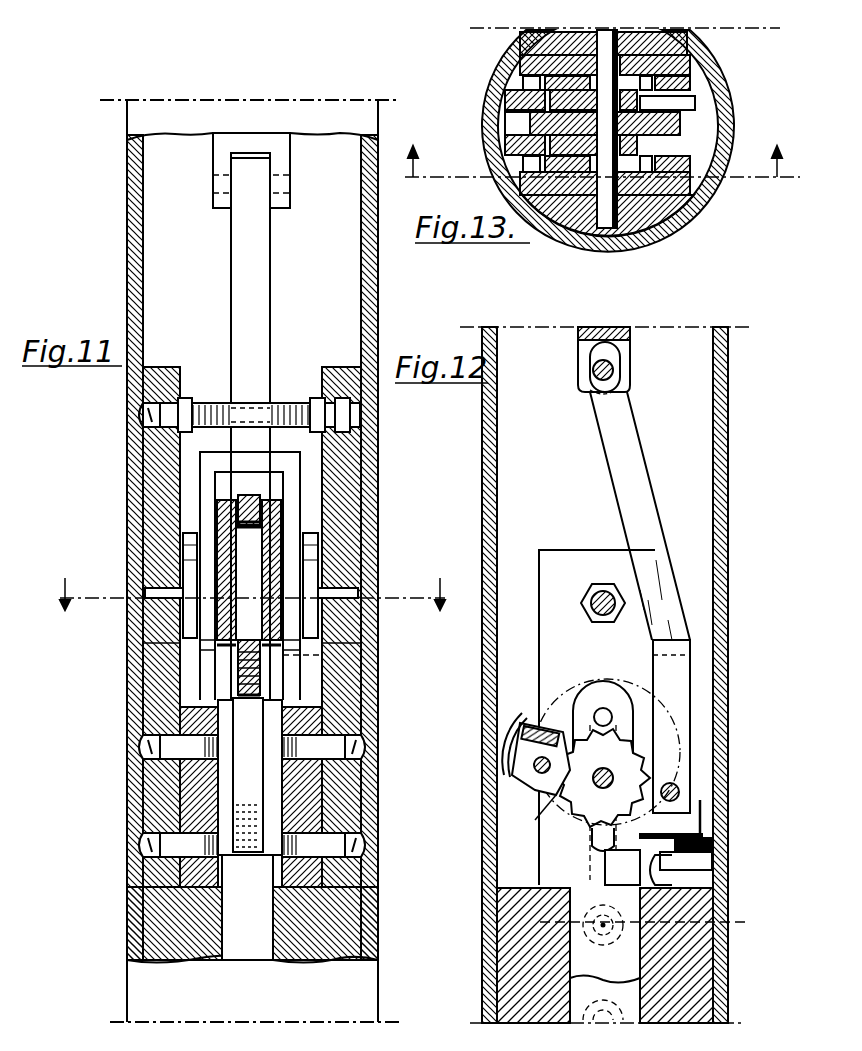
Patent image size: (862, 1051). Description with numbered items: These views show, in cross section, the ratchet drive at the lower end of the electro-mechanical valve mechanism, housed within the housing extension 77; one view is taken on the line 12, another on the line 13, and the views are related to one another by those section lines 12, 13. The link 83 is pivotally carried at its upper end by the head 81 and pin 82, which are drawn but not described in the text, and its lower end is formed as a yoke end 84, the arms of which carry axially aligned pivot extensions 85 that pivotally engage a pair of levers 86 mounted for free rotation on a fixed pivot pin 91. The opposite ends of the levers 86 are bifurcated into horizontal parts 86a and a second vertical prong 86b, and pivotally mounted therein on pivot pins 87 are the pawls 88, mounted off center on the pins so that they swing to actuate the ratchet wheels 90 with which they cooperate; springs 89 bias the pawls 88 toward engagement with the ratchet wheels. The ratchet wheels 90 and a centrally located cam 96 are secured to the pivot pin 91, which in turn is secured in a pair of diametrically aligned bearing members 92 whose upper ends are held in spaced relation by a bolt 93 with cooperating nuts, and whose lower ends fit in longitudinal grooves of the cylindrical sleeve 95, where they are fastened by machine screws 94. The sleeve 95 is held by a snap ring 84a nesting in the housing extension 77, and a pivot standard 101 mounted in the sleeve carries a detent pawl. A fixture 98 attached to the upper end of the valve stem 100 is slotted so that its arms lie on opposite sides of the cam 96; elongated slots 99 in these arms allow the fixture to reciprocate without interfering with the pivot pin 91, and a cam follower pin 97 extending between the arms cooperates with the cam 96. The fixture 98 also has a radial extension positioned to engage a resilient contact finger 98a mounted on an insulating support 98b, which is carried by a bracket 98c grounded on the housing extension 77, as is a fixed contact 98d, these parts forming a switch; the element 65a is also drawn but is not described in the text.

In FIG. 13, the section line 12— 12 is at (599, 161).
In FIG. 11, the section line 13— 13 is at (253, 593).
In FIG. 12, the spring rod 65a is at (702, 812).
In FIG. 11, the housing extension 77 is at (128, 206).
In FIG. 13, the housing extension 77 is at (608, 141).
In FIG. 12, the housing extension 77 is at (728, 390).
In FIG. 11, the head block 81 is at (214, 152).
In FIG. 12, the head block 81 is at (578, 336).
In FIG. 11, the pivot pin 82 is at (218, 190).
In FIG. 12, the pivot pin 82 is at (596, 373).
In FIG. 11, the link 83 is at (240, 264).
In FIG. 12, the link 83 is at (620, 400).
In FIG. 11, the yoke end 84 is at (292, 527).
In FIG. 13, the yoke end 84 is at (700, 96).
In FIG. 12, the yoke end 84 is at (676, 730).
In FIG. 12, the snap ring 84a is at (712, 860).
In FIG. 13, the pivot extensions 85 is at (690, 60).
In FIG. 12, the pivot extensions 85 is at (680, 792).
In FIG. 11, the levers 86 is at (190, 554).
In FIG. 13, the levers 86 is at (700, 75).
In FIG. 12, the horizontal parts of levers 86a is at (530, 727).
In FIG. 13, the vertical prong 86b is at (510, 130).
In FIG. 13, the pivot pins 87 is at (540, 70).
In FIG. 12, the pivot pins 87 is at (540, 724).
In FIG. 13, the pawls 88 is at (520, 92).
In FIG. 12, the pawls 88 is at (556, 785).
In FIG. 12, the springs 89 is at (535, 768).
In FIG. 11, the ratchet wheels 90 is at (340, 627).
In FIG. 13, the ratchet wheels 90 is at (650, 85).
In FIG. 12, the ratchet wheels 90 is at (590, 825).
In FIG. 11, the pivot pin 91 is at (355, 584).
In FIG. 13, the pivot pin 91 is at (605, 240).
In FIG. 12, the pivot pin 91 is at (614, 778).
In FIG. 11, the bearing members 92 is at (150, 482).
In FIG. 13, the bearing members 92 is at (518, 50).
In FIG. 12, the bearing members 92 is at (565, 550).
In FIG. 11, the bolt 93 is at (203, 400).
In FIG. 12, the bolt 93 is at (610, 598).
In FIG. 11, the machine screws 94 is at (150, 750).
In FIG. 12, the machine screws 94 is at (655, 922).
In FIG. 11, the cylindrical sleeve 95 is at (200, 797).
In FIG. 12, the cylindrical sleeve 95 is at (700, 960).
In FIG. 11, the cam 96 is at (240, 660).
In FIG. 13, the cam 96 is at (682, 126).
In FIG. 12, the cam 96 is at (661, 886).
In FIG. 11, the cam follower pin 97 is at (250, 510).
In FIG. 12, the cam follower pin 97 is at (606, 712).
In FIG. 11, the fixture 98 is at (270, 690).
In FIG. 13, the fixture 98 is at (662, 106).
In FIG. 12, the fixture 98 is at (640, 860).
In FIG. 12, the resilient contact finger 98a is at (654, 796).
In FIG. 12, the insulating support 98b is at (702, 838).
In FIG. 12, the bracket 98c is at (713, 876).
In FIG. 12, the fixed contact 98d is at (712, 845).
In FIG. 11, the elongated slots 99 is at (300, 660).
In FIG. 12, the elongated slots 99 is at (603, 848).
In FIG. 11, the valve stem 100 is at (255, 945).
In FIG. 11, the pivot standard 101 is at (345, 965).